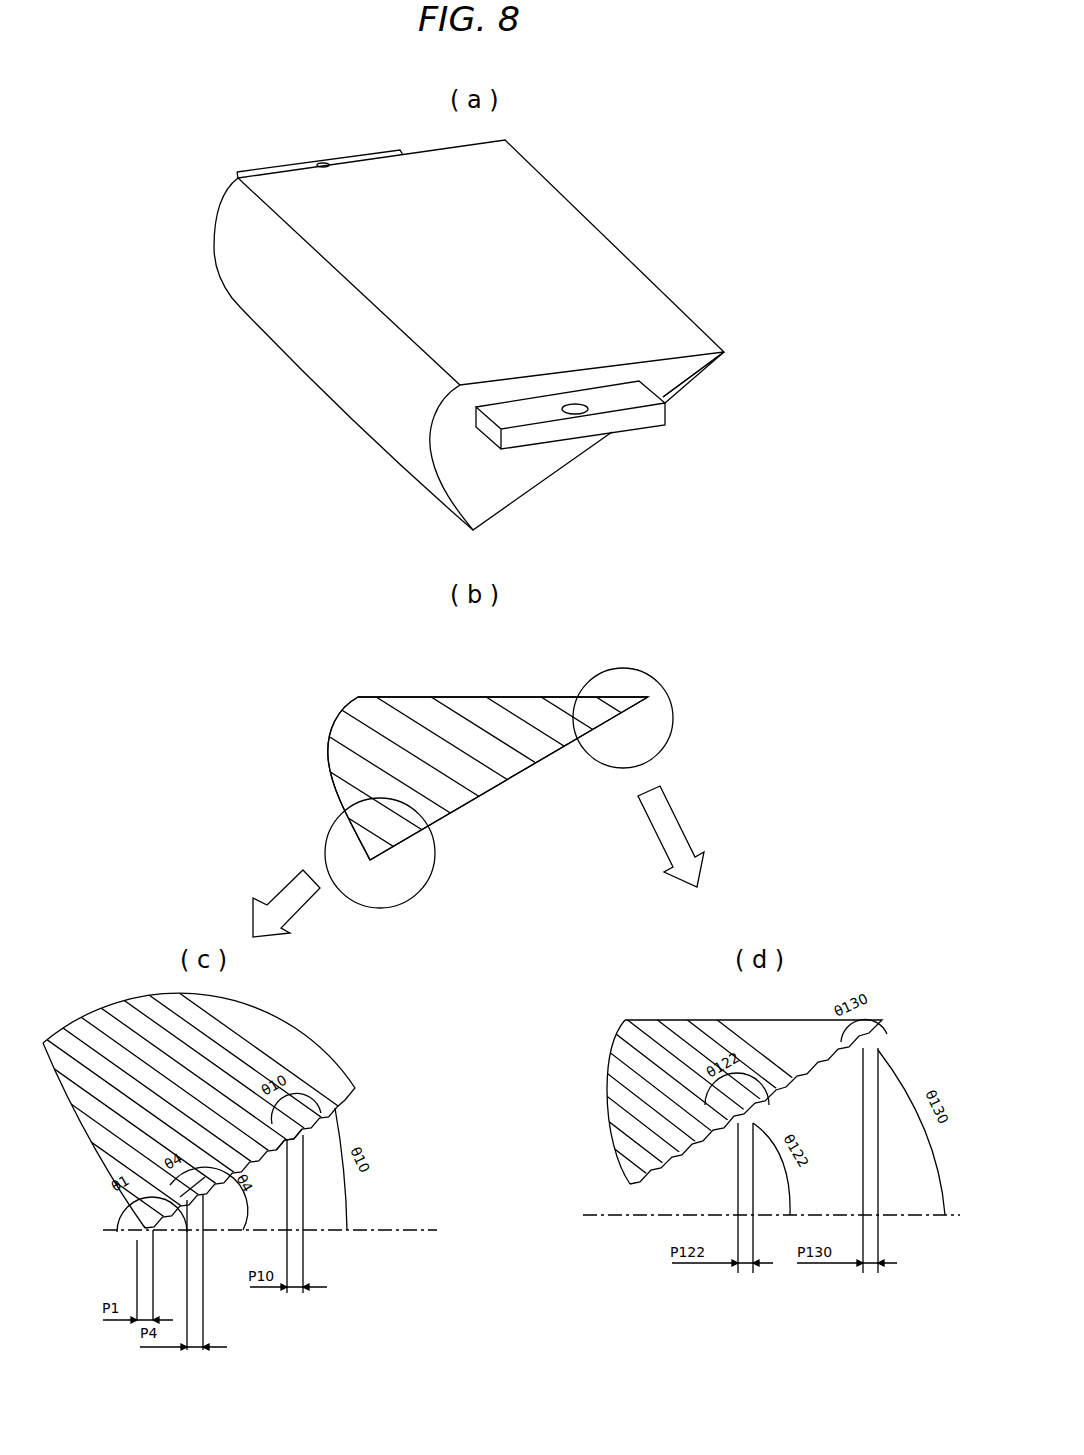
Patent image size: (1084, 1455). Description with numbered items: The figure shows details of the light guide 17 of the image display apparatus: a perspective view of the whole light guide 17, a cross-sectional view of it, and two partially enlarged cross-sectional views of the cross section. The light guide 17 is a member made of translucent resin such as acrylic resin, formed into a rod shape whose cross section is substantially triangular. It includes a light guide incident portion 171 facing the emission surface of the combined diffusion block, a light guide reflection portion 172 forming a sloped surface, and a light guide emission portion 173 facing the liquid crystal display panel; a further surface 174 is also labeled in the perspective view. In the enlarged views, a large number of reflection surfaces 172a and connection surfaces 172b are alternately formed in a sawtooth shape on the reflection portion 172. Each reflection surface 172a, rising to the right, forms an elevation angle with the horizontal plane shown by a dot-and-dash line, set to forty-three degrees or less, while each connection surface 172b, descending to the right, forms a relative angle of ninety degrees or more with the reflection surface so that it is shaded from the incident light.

The light guide 17 is at (708, 474).
The light guide incident portion 171 is at (285, 327).
The light guide reflection portion 172 is at (520, 493).
The light guide emission portion 173 is at (564, 245).
The end surface 174 is at (683, 372).
The reflection surface 172a is at (325, 1112).
The connection surface 172b is at (343, 1167).